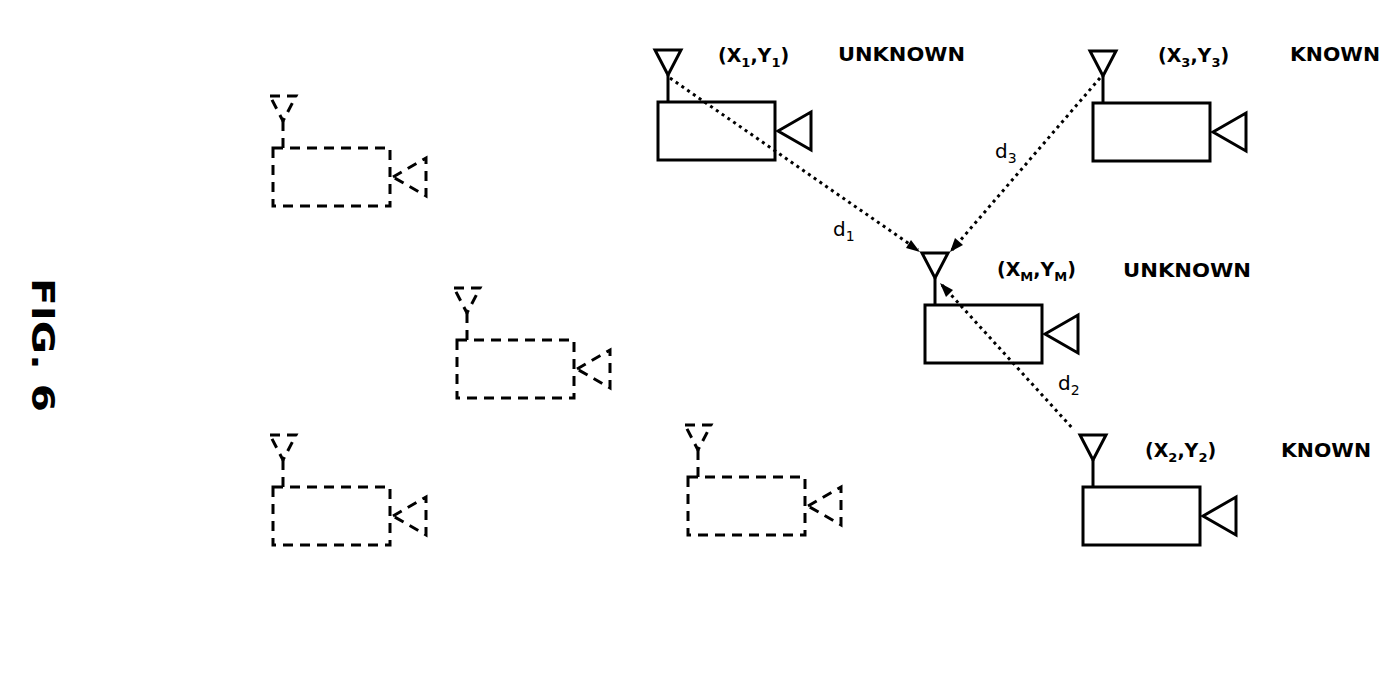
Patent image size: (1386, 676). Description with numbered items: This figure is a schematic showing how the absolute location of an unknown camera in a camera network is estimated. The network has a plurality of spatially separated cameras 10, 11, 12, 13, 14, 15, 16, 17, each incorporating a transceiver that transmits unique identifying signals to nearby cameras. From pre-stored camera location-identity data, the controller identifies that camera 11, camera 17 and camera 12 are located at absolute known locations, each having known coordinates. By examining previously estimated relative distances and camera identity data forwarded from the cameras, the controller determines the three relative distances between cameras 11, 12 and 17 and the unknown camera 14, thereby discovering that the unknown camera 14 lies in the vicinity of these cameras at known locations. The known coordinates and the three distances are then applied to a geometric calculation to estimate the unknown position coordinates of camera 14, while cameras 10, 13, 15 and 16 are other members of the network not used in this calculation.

The camera 10 is at (337, 205).
The camera 11 is at (722, 159).
The camera 12 is at (1157, 160).
The camera 13 is at (521, 397).
The unknown camera 14 is at (989, 362).
The camera 15 is at (337, 544).
The camera 16 is at (752, 534).
The camera 17 is at (1147, 544).